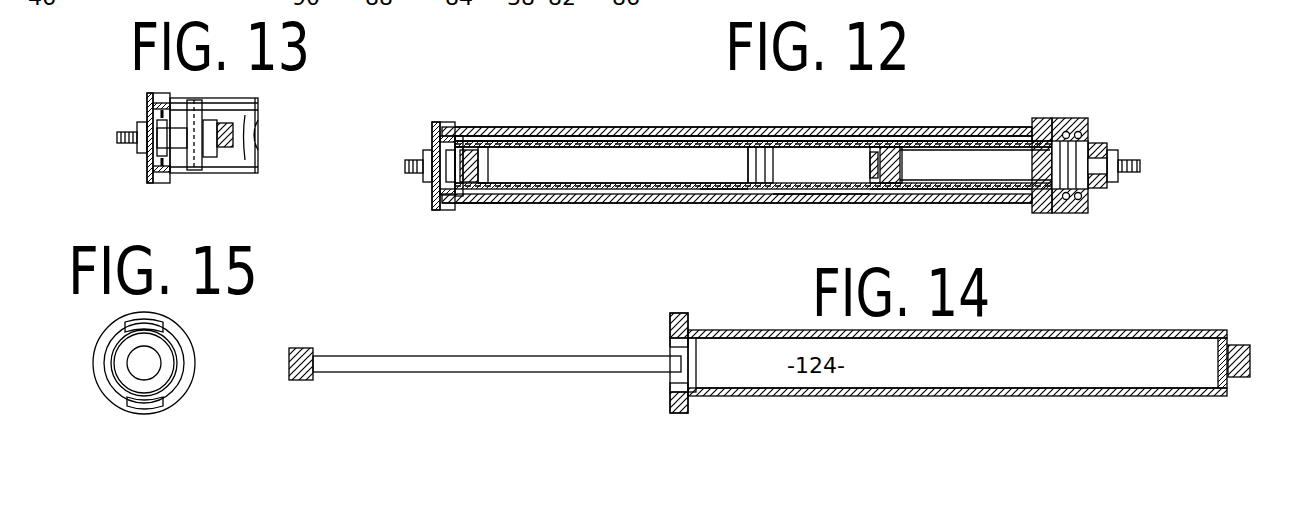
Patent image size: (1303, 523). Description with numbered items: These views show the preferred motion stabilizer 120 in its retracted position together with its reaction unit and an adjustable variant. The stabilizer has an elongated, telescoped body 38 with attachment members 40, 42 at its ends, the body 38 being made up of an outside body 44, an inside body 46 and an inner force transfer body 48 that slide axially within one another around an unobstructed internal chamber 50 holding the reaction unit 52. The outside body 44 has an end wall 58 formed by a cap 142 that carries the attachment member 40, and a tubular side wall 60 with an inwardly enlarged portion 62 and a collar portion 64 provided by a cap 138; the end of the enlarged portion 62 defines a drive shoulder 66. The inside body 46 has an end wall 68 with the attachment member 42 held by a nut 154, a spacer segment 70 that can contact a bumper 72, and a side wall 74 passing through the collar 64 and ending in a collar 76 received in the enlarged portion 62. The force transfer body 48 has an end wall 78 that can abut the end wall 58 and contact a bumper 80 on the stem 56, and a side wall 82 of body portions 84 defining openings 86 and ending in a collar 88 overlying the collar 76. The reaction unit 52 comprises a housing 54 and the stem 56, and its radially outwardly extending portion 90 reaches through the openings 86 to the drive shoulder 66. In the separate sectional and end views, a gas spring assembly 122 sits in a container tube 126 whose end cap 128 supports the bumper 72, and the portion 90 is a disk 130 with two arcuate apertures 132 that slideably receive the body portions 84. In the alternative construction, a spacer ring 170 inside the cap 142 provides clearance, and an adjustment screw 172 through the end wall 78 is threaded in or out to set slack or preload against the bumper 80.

In FIG. 12, the body 38 is at (712, 194).
In FIG. 12, the attachment member 40 is at (410, 160).
In FIG. 13, the attachment member 40 is at (120, 137).
In FIG. 12, the attachment member 42 is at (1145, 162).
In FIG. 12, the outside body 44 is at (636, 141).
In FIG. 12, the inside body 46 is at (880, 194).
In FIG. 12, the inner force transfer body 48 is at (570, 141).
In FIG. 12, the internal chamber 50 is at (645, 183).
In FIG. 12, the reaction unit 52 is at (690, 152).
In FIG. 15, the reaction unit 52 is at (200, 333).
In FIG. 14, the reaction unit 52 is at (1110, 308).
In FIG. 12, the housing 54 is at (556, 203).
In FIG. 14, the housing 54 is at (912, 396).
In FIG. 13, the stem 56 is at (248, 140).
In FIG. 14, the stem 56 is at (468, 356).
In FIG. 12, the end wall 58 is at (436, 128).
In FIG. 13, the end wall 58 is at (150, 110).
In FIG. 12, the tubular side wall 60 is at (498, 203).
In FIG. 12, the inwardly enlarged portion 62 is at (980, 141).
In FIG. 12, the collar portion 64 is at (1092, 128).
In FIG. 12, the drive shoulder 66 is at (752, 147).
In FIG. 12, the end wall 68 is at (1110, 143).
In FIG. 12, the spacer segment 70 is at (982, 178).
In FIG. 12, the bumper 72 is at (888, 147).
In FIG. 14, the bumper 72 is at (1252, 362).
In FIG. 12, the side wall 74 is at (805, 194).
In FIG. 12, the collar 76 is at (474, 140).
In FIG. 12, the end wall 78 is at (455, 172).
In FIG. 12, the bumper 80 is at (470, 166).
In FIG. 13, the bumper 80 is at (232, 135).
In FIG. 15, the bumper 80 is at (142, 360).
In FIG. 14, the bumper 80 is at (305, 382).
In FIG. 12, the side wall 82 is at (602, 136).
In FIG. 12, the body portions 84 is at (668, 127).
In FIG. 12, the openings 86 is at (530, 127).
In FIG. 12, the collar 88 is at (770, 141).
In FIG. 12, the radially outwardly extending portion 90 is at (476, 203).
In FIG. 15, the radially outwardly extending portion 90 is at (185, 373).
In FIG. 14, the radially outwardly extending portion 90 is at (680, 412).
In FIG. 12, the motion stabilizer 120 is at (952, 72).
In FIG. 14, the gas spring assembly 122 is at (1020, 372).
In FIG. 14, the container tube 126 is at (806, 396).
In FIG. 14, the end cap 128 is at (1224, 345).
In FIG. 15, the disk 130 is at (183, 397).
In FIG. 14, the disk 130 is at (690, 322).
In FIG. 15, the arcuate apertures 132 is at (128, 322).
In FIG. 14, the arcuate apertures 132 is at (670, 327).
In FIG. 12, the cap 138 is at (1046, 118).
In FIG. 12, the cap 142 is at (452, 122).
In FIG. 13, the cap 142 is at (155, 97).
In FIG. 12, the nut 154 is at (1116, 182).
In FIG. 13, the spacer ring 170 is at (165, 172).
In FIG. 13, the adjustment screw 172 is at (165, 150).